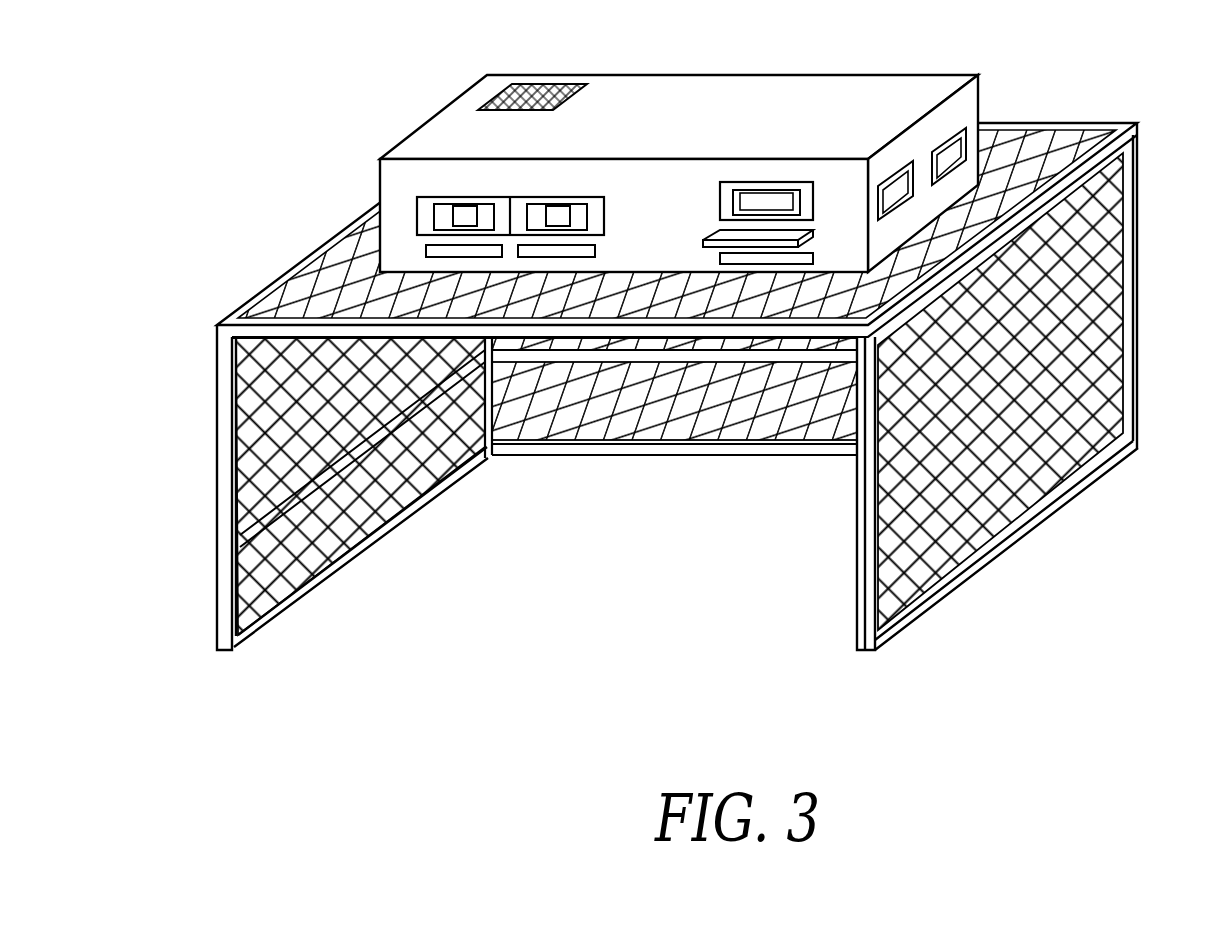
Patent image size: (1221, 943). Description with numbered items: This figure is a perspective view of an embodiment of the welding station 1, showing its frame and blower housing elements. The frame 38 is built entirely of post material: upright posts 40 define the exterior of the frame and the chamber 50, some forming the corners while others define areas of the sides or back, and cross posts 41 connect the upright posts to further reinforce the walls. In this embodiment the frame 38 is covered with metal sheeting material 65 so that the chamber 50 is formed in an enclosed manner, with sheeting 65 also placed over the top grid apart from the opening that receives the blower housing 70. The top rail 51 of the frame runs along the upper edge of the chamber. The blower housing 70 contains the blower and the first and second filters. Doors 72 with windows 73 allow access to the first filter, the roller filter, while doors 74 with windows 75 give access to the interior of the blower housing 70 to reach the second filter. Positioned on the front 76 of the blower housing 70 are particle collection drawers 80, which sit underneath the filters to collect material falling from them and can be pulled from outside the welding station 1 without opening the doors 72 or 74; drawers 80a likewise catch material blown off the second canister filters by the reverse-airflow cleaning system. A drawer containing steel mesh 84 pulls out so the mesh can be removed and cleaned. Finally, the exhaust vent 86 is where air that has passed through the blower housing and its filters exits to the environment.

The welding station 1 is at (679, 341).
The frame 38 is at (1140, 354).
The upright posts 40 is at (217, 426).
The cross posts 41 is at (323, 577).
The chamber 50 is at (671, 540).
The top frame rail 51 is at (300, 268).
The metal sheeting material 65 is at (348, 415).
The blower housing 70 is at (702, 178).
The doors 72 is at (730, 188).
The windows 73 is at (745, 200).
The doors 74 is at (504, 200).
The windows 75 is at (462, 217).
The front 76 is at (420, 265).
The particle collection drawers 80 is at (786, 262).
The drawers 80a is at (490, 258).
The drawer containing steel mesh 84 is at (714, 250).
The exhaust vent 86 is at (539, 83).